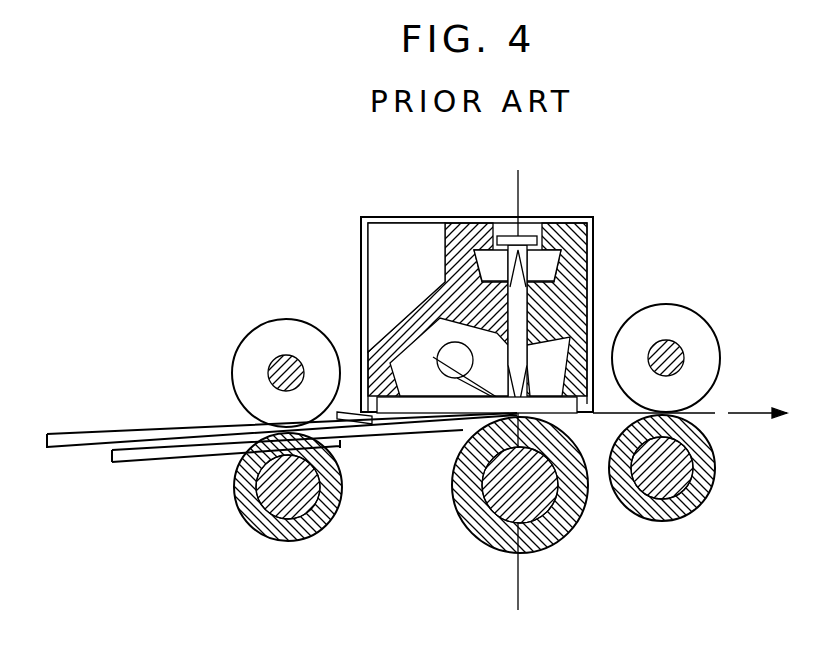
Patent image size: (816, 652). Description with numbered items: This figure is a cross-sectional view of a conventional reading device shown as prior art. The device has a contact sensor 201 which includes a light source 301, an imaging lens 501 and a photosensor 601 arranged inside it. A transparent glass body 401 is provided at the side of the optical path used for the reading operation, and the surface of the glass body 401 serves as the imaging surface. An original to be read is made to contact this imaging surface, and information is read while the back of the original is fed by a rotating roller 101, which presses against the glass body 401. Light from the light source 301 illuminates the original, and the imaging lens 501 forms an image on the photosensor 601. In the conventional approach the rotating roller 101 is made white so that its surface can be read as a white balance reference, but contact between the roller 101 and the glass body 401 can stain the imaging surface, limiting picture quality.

The rotating roller 101 is at (555, 525).
The contact sensor 201 is at (593, 217).
The light source 301 is at (455, 360).
The transparent glass body 401 is at (417, 412).
The imaging lens 501 is at (522, 308).
The photosensor 601 is at (523, 236).